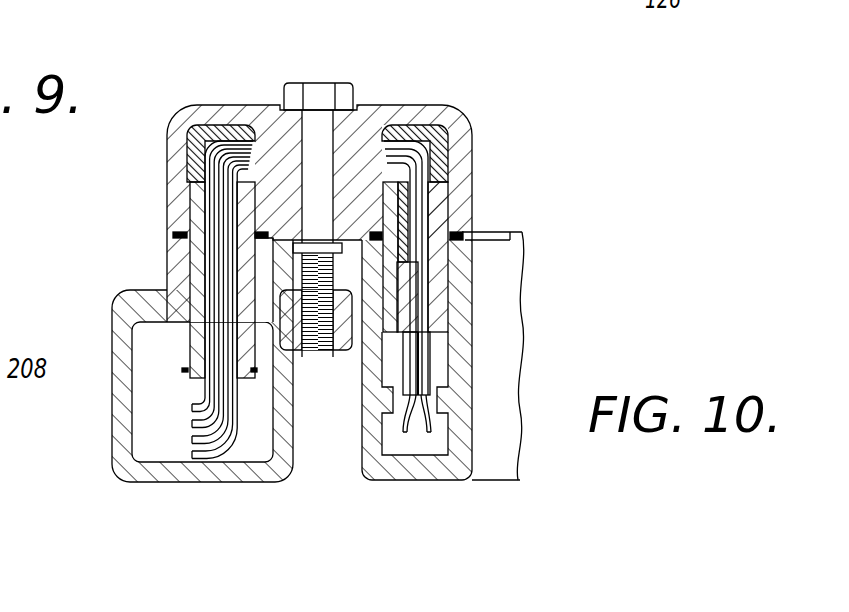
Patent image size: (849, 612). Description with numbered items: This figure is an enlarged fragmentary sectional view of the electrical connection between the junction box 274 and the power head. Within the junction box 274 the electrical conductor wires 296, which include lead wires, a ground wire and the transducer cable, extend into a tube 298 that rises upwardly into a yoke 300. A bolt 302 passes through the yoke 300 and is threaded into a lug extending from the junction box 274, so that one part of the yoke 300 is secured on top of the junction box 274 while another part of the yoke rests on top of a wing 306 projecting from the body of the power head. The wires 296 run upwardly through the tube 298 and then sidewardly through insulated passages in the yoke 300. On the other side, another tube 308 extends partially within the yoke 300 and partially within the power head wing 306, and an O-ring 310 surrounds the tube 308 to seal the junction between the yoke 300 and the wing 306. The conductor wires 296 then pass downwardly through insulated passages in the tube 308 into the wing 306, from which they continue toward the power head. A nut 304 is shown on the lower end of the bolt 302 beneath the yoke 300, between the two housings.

The junction box 274 is at (118, 416).
The wires 296 is at (192, 405).
The tube 298 is at (190, 303).
The yoke 300 is at (260, 118).
The bolt 302 is at (328, 95).
The nut 304 is at (352, 348).
The wing 306 is at (457, 285).
The tube 308 is at (442, 197).
The O-ring 310 is at (467, 233).